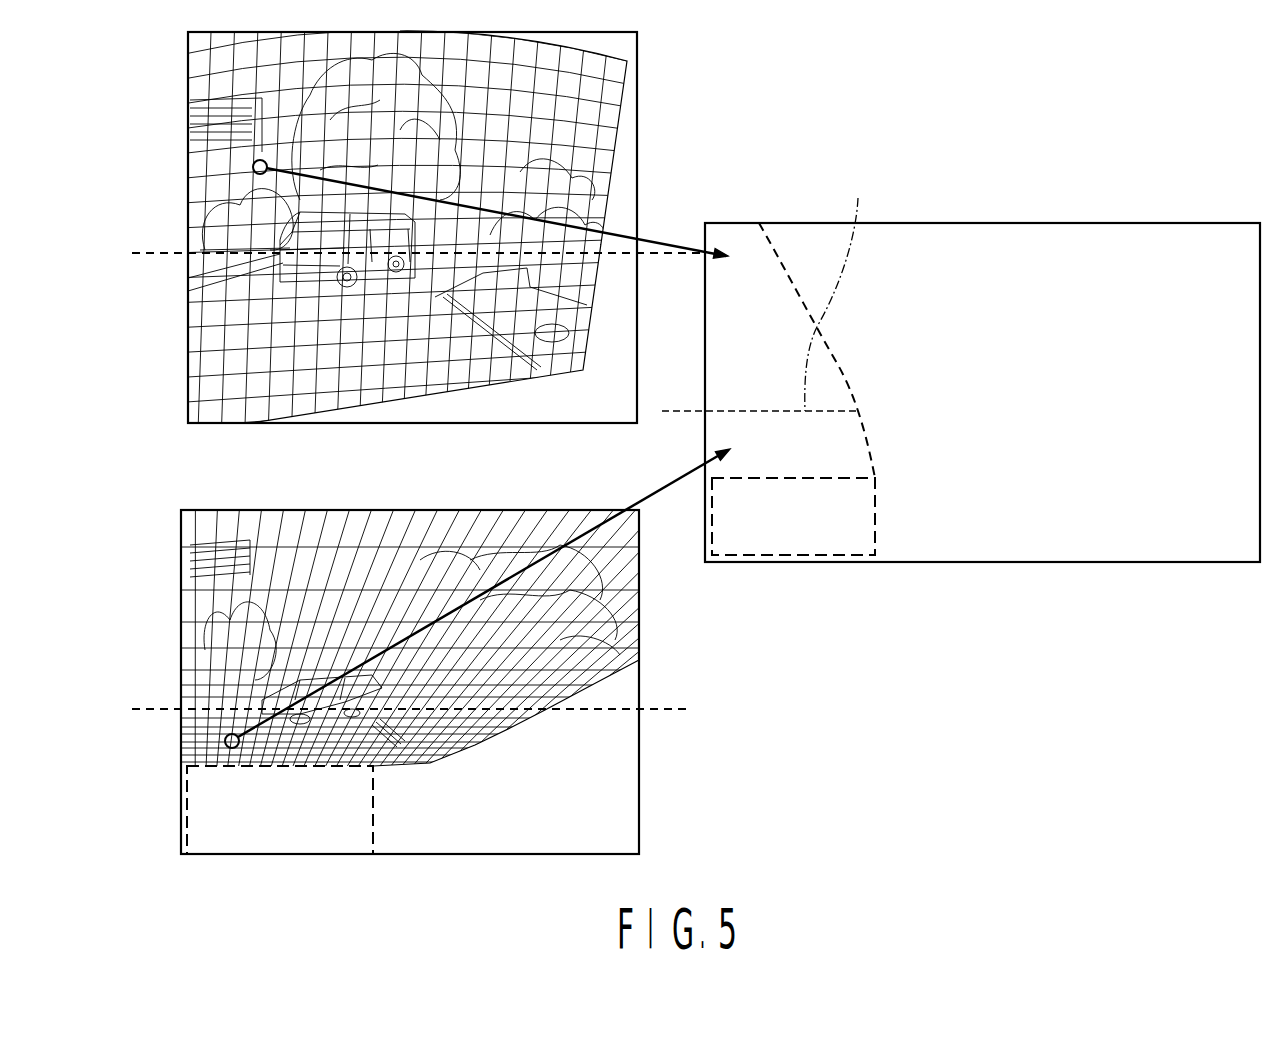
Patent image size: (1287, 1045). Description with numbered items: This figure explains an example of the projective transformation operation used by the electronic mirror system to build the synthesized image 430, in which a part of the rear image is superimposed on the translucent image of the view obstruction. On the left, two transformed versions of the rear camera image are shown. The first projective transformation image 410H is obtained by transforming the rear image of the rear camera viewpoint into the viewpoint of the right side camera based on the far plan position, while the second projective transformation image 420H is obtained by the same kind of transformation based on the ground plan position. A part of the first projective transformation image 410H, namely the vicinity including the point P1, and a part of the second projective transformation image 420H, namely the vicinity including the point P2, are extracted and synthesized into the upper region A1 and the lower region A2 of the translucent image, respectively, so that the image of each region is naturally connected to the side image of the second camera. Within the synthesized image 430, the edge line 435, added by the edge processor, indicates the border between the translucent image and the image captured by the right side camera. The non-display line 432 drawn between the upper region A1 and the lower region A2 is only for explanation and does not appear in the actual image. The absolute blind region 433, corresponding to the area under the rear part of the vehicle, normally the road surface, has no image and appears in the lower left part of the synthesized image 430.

The first projective transformation image 410H is at (188, 90).
The second projective transformation image 420H is at (181, 555).
The synthesized image 430 is at (1000, 223).
The non-display line 432 is at (150, 253).
The absolute blind region 433 is at (197, 813).
The edge line 435 is at (783, 262).
The point P1 is at (253, 165).
The point P2 is at (225, 741).
The upper region A1 is at (718, 337).
The lower region A2 is at (718, 435).